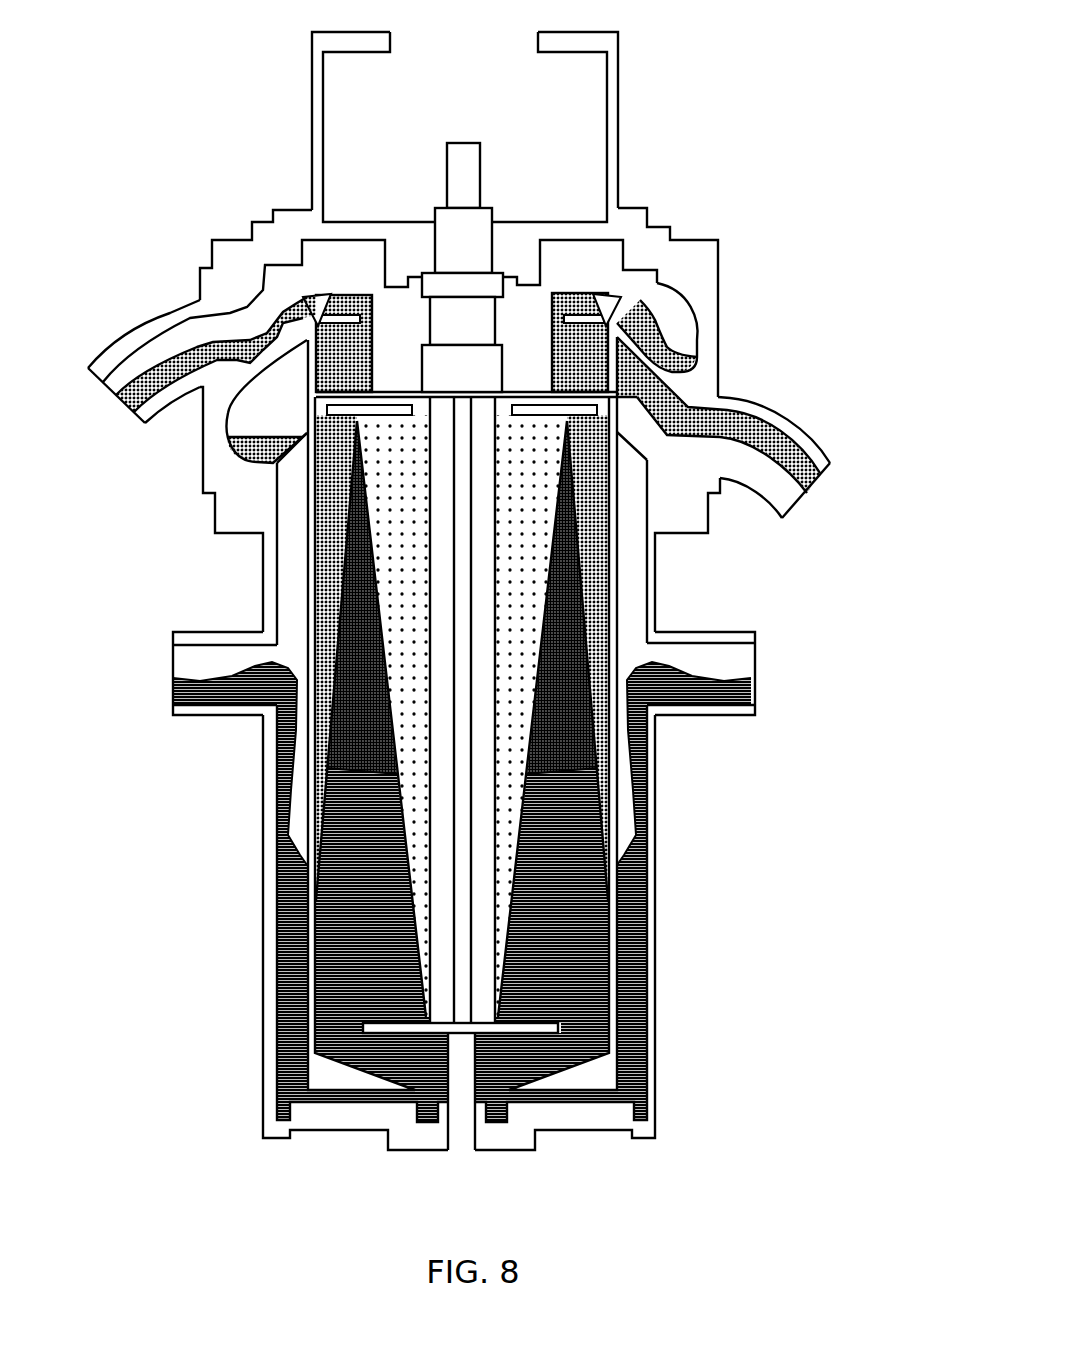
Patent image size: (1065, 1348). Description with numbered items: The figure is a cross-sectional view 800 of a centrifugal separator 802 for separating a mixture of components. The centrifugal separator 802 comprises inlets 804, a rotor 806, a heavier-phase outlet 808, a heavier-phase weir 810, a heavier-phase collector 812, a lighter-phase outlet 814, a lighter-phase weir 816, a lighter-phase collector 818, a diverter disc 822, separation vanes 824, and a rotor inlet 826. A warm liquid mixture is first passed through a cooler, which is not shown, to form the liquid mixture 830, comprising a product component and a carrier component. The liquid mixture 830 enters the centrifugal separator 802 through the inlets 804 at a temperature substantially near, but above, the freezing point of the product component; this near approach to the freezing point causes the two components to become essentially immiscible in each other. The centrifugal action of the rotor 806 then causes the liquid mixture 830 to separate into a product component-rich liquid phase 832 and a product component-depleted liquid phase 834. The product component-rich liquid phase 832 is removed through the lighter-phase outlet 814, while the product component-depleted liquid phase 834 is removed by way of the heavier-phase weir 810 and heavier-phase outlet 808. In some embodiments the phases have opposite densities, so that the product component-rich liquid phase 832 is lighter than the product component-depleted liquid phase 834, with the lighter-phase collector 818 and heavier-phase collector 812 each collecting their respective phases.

The cross-sectional view of centrifugal separator 800 is at (145, 50).
The centrifugal separator 802 is at (320, 117).
The inlets 804 is at (212, 630).
The rotor 806 is at (318, 1072).
The heavier-phase outlet 808 is at (100, 357).
The heavier-phase weir 810 is at (312, 297).
The heavier-phase collector 812 is at (297, 363).
The lighter-phase outlet 814 is at (754, 427).
The lighter-phase weir 816 is at (527, 413).
The lighter-phase collector 818 is at (697, 317).
The diverter disc 822 is at (510, 1030).
The separation vanes 824 is at (463, 980).
The rotor inlet 826 is at (478, 1135).
The liquid mixture 830 is at (160, 673).
The product component-rich liquid phase 832 is at (727, 447).
The product component-depleted liquid phase 834 is at (197, 350).